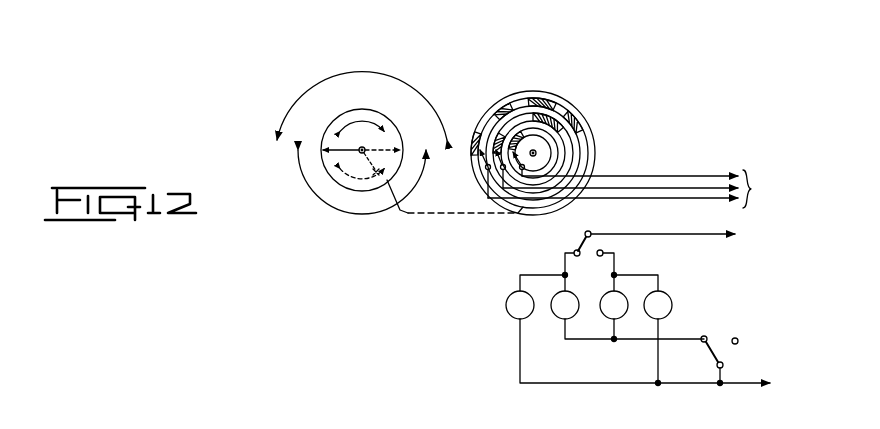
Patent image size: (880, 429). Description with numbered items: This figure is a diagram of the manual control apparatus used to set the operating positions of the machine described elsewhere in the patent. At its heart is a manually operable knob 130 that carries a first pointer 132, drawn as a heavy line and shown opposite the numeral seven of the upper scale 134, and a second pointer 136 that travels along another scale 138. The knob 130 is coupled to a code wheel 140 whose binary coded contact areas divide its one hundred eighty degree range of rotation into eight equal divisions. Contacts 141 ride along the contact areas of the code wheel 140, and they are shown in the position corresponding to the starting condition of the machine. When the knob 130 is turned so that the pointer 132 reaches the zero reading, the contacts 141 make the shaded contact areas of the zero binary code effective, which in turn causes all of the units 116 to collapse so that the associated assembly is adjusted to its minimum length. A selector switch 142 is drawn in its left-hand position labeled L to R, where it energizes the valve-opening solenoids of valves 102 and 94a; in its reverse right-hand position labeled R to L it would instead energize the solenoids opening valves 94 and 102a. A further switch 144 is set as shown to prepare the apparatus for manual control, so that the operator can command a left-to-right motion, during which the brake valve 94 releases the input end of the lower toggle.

The upper scale 134 is at (363, 62).
The scale 138 is at (362, 213).
The manually operable knob 130 is at (375, 110).
The first pointer 132 is at (333, 148).
The pointer 136 is at (402, 147).
The code wheel 140 is at (567, 67).
The contacts 141 is at (480, 188).
The units 116 is at (634, 189).
The selector switch 142 is at (594, 239).
The switch 144 is at (714, 363).
The valve 94a is at (520, 305).
The valve 102 is at (565, 305).
The valve 102a is at (614, 305).
The brake valve 94 is at (658, 305).